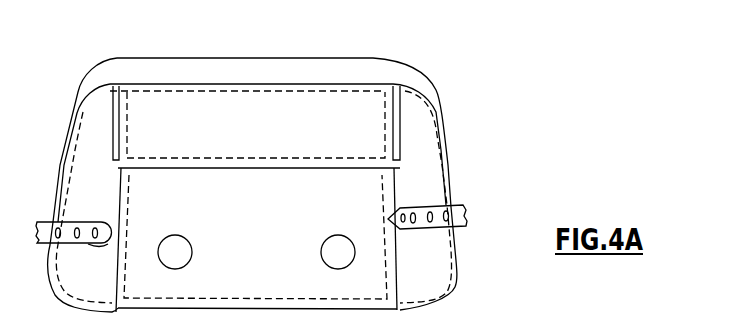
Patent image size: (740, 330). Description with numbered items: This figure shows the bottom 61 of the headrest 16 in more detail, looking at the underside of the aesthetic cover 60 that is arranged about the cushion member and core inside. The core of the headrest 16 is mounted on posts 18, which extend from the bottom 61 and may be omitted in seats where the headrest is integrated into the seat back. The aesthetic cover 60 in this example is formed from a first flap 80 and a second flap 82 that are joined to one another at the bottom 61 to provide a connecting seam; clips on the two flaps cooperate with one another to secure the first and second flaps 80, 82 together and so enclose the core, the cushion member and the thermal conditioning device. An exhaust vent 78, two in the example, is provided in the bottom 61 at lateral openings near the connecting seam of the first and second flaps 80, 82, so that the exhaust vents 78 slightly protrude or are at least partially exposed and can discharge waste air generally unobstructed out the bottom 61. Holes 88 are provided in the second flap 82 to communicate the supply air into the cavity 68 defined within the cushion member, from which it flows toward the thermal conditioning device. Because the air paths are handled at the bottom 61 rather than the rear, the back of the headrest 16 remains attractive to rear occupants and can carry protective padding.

The headrest 16 is at (451, 49).
The posts 18 is at (462, 224).
The aesthetic cover 60 is at (438, 274).
The bottom 61 is at (438, 167).
The cavity 68 is at (316, 256).
The exhaust vent 78 is at (113, 128).
The first flap 80 is at (274, 134).
The second flap 82 is at (276, 223).
The holes 88 is at (172, 236).